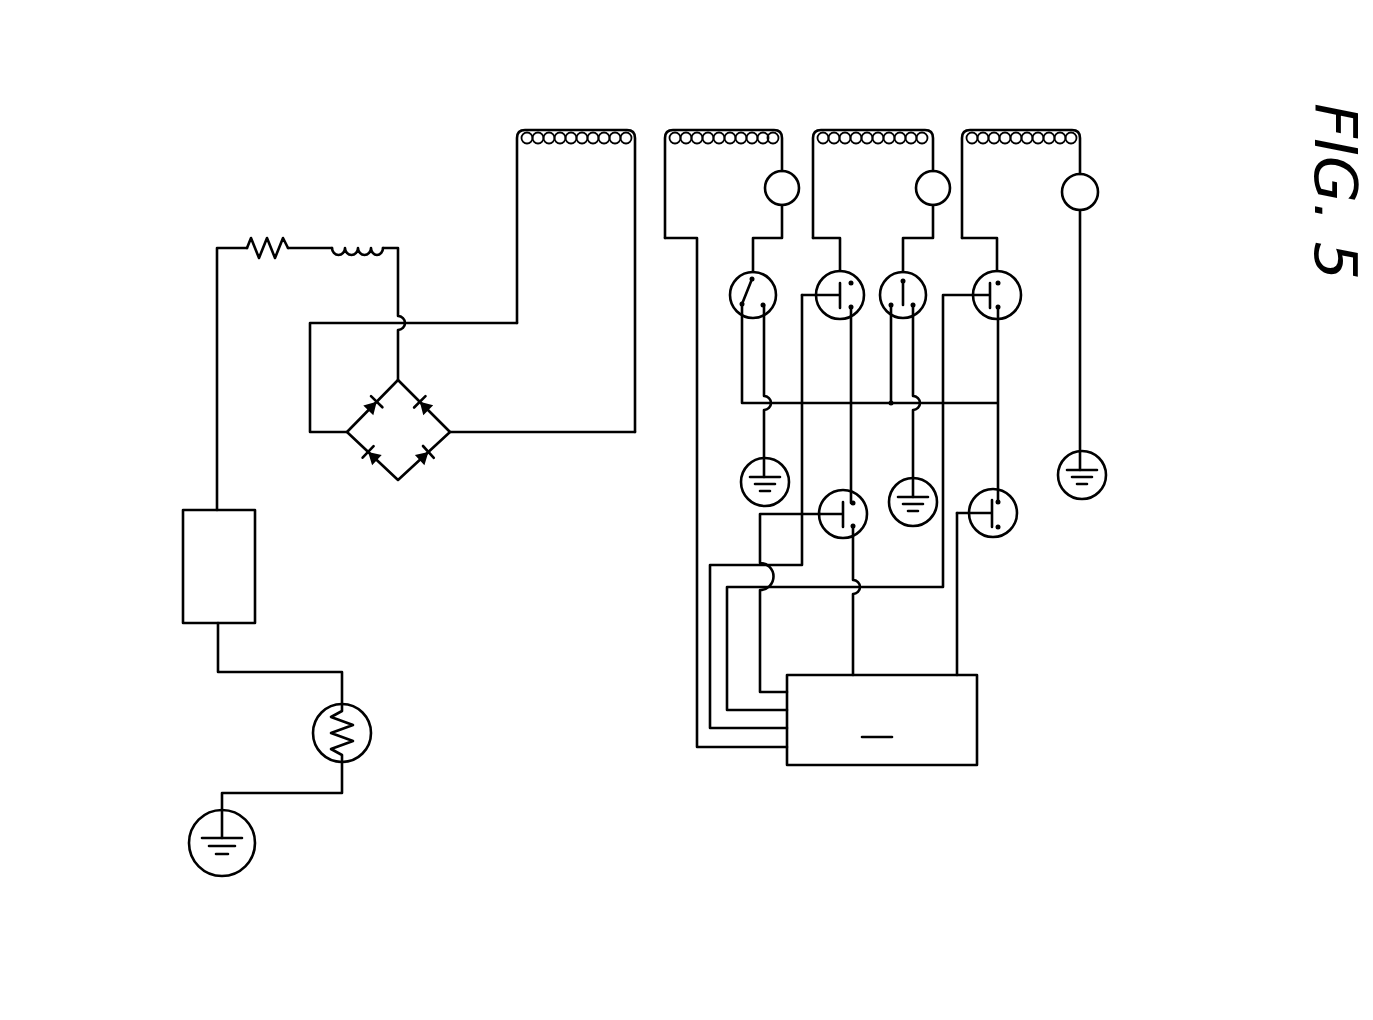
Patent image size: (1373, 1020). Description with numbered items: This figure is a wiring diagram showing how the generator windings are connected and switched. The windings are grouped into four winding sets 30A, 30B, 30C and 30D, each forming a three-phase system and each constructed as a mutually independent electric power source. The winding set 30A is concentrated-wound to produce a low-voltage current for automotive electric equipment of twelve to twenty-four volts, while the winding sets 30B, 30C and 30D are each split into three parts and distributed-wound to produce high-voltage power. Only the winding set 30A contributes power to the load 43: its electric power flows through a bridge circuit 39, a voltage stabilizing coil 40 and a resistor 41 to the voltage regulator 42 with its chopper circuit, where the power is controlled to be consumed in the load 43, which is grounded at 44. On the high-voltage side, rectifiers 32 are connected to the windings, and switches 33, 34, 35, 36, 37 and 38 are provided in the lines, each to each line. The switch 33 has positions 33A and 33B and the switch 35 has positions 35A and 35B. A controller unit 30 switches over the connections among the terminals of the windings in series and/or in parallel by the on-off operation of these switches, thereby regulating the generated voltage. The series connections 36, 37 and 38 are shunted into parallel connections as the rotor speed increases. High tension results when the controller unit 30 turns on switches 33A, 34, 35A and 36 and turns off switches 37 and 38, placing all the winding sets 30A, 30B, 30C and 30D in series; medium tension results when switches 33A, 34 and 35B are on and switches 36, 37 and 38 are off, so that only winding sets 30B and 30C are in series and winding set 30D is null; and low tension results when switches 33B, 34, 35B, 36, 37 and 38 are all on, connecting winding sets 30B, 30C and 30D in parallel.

The controller unit 30 is at (882, 720).
The winding set 30A is at (558, 128).
The winding set 30B is at (717, 126).
The winding set 30C is at (860, 127).
The winding set 30D is at (1010, 127).
The rectifier 32 is at (764, 187).
The switch 33 is at (754, 292).
The switch 33A is at (738, 310).
The switch 33B is at (768, 292).
The switch 34 is at (849, 279).
The switch 35 is at (924, 345).
The switch 35A is at (888, 310).
The switch 35B is at (918, 310).
The switch (series connection) 36 is at (1012, 276).
The switch (series connection) 37 is at (837, 487).
The switch (series connection) 38 is at (1015, 522).
The bridge circuit 39 is at (412, 466).
The voltage stabilizing coil 40 is at (360, 243).
The resistor 41 is at (277, 243).
The voltage regulator 42 is at (245, 570).
The load 43 is at (373, 731).
The ground 44 is at (205, 815).